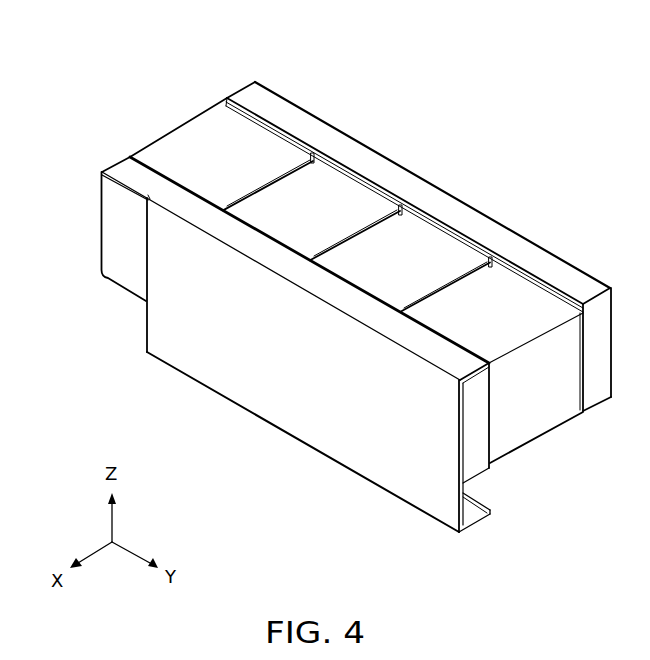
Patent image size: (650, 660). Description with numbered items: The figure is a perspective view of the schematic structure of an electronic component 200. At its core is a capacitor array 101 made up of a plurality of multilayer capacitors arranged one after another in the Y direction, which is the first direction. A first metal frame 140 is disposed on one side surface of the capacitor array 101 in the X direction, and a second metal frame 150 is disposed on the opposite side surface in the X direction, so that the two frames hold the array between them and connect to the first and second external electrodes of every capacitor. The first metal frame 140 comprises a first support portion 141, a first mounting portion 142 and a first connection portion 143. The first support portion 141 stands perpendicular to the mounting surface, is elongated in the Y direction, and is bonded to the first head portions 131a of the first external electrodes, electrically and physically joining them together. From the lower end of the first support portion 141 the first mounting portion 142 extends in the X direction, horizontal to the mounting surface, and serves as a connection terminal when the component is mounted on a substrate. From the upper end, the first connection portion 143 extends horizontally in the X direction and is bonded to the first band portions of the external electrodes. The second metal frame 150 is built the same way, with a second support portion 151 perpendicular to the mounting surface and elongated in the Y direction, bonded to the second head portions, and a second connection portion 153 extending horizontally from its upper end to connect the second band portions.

The electronic component 200 is at (417, 44).
The capacitor array 101 is at (167, 127).
The first head portion 131a is at (116, 232).
The first metal frame 140 is at (174, 386).
The first support portion 141 is at (237, 357).
The first mounting portion 142 is at (483, 512).
The first connection portion 143 is at (343, 298).
The second metal frame 150 is at (472, 181).
The second support portion 151 is at (407, 167).
The second connection portion 153 is at (510, 247).